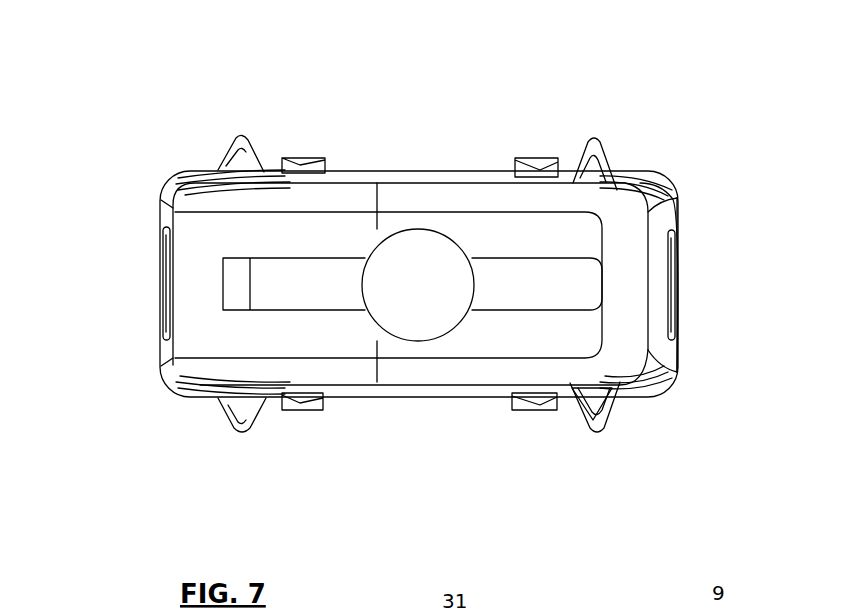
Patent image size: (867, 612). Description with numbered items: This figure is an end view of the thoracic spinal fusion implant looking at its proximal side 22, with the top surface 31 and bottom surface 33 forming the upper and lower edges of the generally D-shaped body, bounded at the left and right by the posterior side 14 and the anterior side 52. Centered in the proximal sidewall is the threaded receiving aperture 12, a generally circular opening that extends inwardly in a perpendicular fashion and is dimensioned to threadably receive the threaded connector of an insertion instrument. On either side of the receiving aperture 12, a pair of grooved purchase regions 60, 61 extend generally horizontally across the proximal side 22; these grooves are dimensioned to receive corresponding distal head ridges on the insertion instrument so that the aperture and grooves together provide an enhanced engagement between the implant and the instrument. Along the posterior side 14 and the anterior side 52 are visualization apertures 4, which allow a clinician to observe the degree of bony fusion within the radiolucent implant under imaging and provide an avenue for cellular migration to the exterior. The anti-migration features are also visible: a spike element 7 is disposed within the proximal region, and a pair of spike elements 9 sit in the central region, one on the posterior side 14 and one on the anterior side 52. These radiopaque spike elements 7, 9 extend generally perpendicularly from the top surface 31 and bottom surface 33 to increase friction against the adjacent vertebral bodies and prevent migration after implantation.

The visualization aperture 4 is at (673, 240).
The spike element 7 is at (573, 165).
The spike element 9 is at (225, 152).
The threaded receiving aperture 12 is at (405, 314).
The posterior side 14 is at (143, 347).
The proximal side 22 is at (472, 343).
The top surface 31 is at (404, 165).
The bottom surface 33 is at (335, 406).
The anterior side 52 is at (683, 346).
The grooved purchase region 60 is at (283, 283).
The grooved purchase region 61 is at (548, 283).